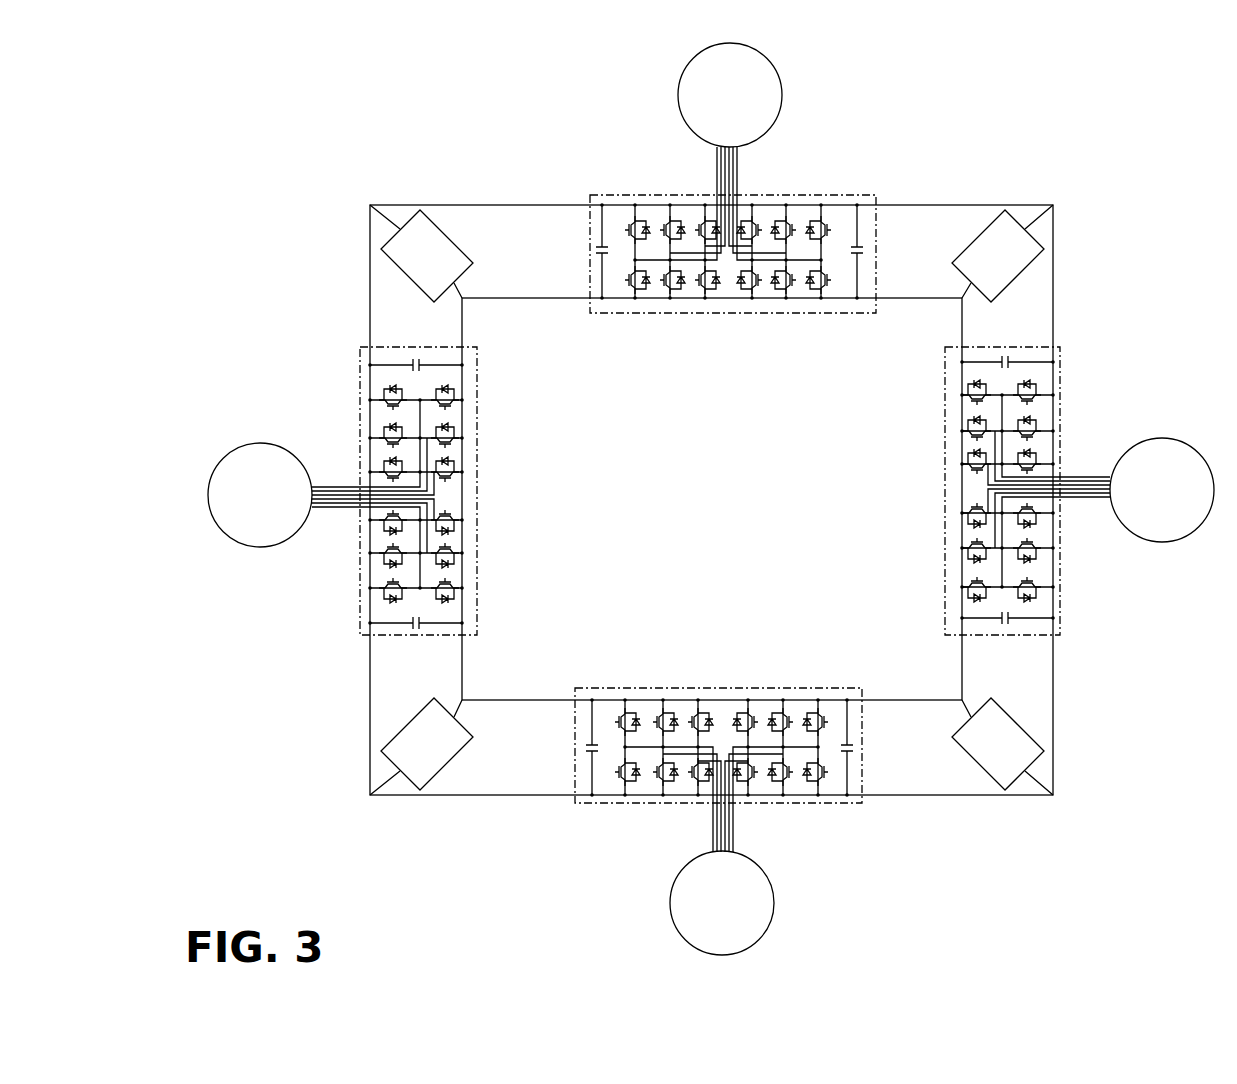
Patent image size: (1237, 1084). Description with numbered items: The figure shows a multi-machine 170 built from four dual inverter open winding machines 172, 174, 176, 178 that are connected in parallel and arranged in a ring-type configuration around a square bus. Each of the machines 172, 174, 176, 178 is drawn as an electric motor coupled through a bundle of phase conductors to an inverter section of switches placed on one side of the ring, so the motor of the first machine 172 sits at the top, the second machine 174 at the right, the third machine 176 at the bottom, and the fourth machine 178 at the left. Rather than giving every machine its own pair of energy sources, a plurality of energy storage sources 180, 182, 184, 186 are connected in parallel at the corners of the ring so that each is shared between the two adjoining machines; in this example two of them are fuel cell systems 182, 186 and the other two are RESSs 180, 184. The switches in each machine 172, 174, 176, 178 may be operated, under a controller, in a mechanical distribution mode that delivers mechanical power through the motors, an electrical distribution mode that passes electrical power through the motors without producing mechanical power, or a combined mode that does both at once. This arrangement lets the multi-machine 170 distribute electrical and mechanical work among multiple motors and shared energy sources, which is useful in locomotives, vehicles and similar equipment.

The multi-machine 170 is at (1000, 125).
The dual inverter open winding machine 172 is at (786, 168).
The dual inverter open winding machine 174 is at (1097, 447).
The dual inverter open winding machine 176 is at (760, 835).
The dual inverter open winding machine 178 is at (343, 545).
The energy storage source (RESS) 180 is at (998, 256).
The energy storage source (fuel cell system) 182 is at (998, 744).
The energy storage source (RESS) 184 is at (427, 744).
The energy storage source (fuel cell system) 186 is at (427, 256).